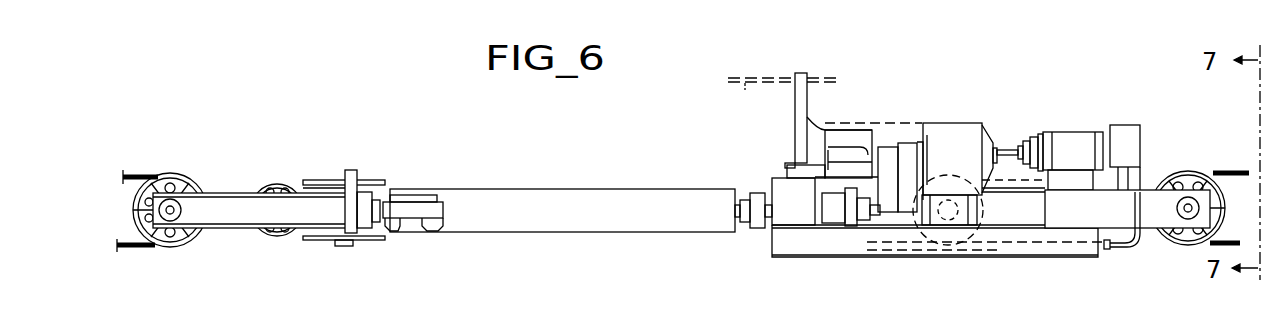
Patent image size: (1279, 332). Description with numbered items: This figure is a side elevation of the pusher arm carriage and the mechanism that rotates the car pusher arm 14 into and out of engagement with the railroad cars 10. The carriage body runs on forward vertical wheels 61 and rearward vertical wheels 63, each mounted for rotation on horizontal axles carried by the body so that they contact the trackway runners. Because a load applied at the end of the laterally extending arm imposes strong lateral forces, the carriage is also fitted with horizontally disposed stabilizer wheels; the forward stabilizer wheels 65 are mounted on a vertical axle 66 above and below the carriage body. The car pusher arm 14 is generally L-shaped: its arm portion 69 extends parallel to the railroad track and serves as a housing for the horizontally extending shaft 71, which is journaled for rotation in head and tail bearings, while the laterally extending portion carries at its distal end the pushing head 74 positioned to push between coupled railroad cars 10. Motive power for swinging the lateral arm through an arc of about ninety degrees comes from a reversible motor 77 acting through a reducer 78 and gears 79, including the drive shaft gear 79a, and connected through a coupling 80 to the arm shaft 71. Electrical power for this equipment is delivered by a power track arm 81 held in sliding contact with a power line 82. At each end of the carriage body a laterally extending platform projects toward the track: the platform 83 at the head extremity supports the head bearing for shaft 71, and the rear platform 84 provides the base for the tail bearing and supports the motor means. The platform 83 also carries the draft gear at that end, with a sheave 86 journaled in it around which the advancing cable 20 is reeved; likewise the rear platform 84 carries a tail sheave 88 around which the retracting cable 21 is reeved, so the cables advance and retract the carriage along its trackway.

The railroad cars 10 is at (690, 331).
The car pusher arm 14 is at (584, 182).
The advancing cable 20 is at (146, 250).
The retracting cable 21 is at (1230, 171).
The forward vertical wheels 61 is at (283, 183).
The rearward vertical wheels 63 is at (958, 237).
The forward stabilizer wheels 65 is at (320, 180).
The vertical axle 66 is at (346, 247).
The arm portion 69 is at (560, 222).
The shaft 71 is at (750, 221).
The pushing head 74 is at (410, 219).
The reversible motor 77 is at (1070, 131).
The reducer 78 is at (960, 123).
The gears 79 is at (916, 142).
The drive shaft gear 79a is at (872, 214).
The coupling 80 is at (852, 221).
The power track arm 81 is at (795, 103).
The power line 82 is at (745, 92).
The platform 83 is at (226, 215).
The rear platform 84 is at (1163, 228).
The sheave 86 is at (172, 245).
The tail sheave 88 is at (1178, 181).